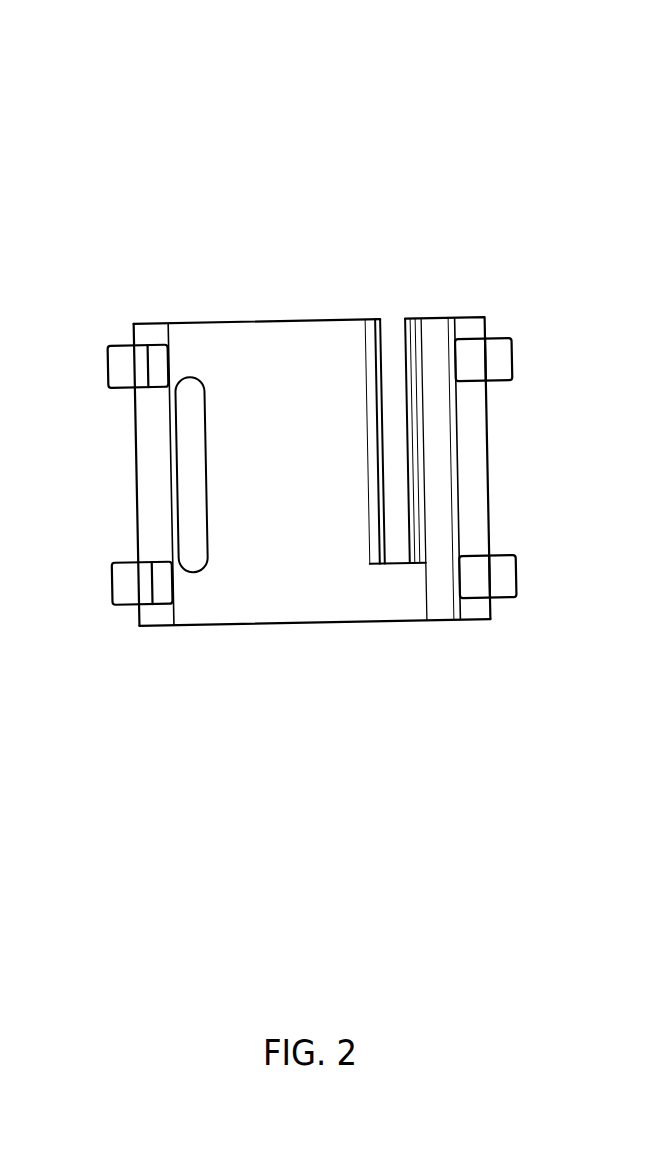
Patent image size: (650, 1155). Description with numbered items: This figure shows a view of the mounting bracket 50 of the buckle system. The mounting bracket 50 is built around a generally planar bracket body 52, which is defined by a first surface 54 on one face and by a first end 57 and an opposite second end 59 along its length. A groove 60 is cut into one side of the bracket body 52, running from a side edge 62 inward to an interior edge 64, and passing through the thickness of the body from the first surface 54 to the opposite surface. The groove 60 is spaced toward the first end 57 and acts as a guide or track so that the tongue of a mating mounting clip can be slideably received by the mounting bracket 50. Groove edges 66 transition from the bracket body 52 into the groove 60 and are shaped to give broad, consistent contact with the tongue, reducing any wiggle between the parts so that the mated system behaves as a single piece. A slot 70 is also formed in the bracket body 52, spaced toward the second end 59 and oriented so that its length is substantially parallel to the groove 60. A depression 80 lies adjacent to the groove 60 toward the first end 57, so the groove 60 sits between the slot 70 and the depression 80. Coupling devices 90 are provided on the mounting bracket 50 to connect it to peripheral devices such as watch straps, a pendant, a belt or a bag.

The mounting bracket 50 is at (306, 382).
The bracket body 52 is at (308, 475).
The first surface 54 is at (243, 592).
The first end 57 is at (507, 338).
The second end 59 is at (82, 472).
The groove 60 is at (393, 331).
The side edge 62 is at (236, 323).
The interior edge 64 is at (397, 562).
The groove edges 66 is at (415, 437).
The slot 70 is at (196, 556).
The depression 80 is at (437, 587).
The coupling devices 90 is at (112, 345).